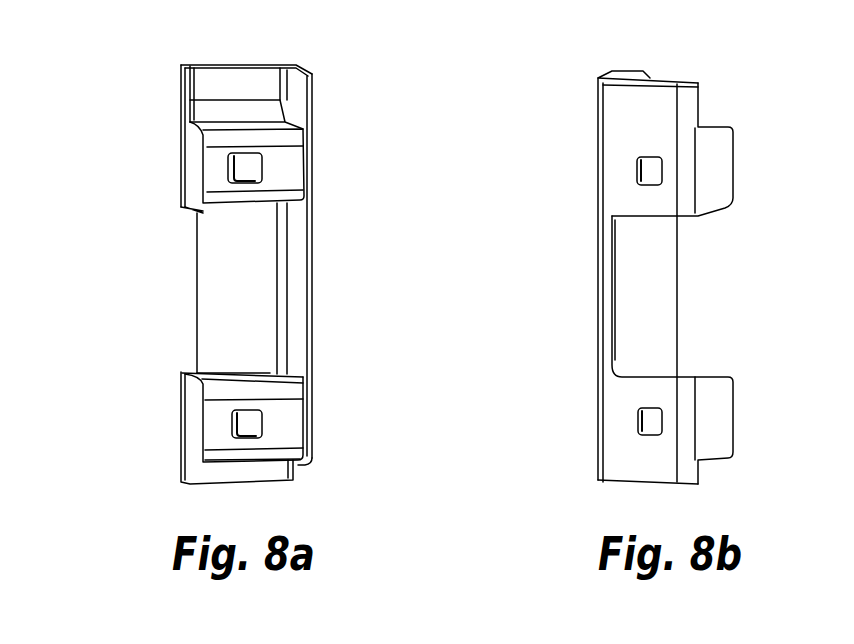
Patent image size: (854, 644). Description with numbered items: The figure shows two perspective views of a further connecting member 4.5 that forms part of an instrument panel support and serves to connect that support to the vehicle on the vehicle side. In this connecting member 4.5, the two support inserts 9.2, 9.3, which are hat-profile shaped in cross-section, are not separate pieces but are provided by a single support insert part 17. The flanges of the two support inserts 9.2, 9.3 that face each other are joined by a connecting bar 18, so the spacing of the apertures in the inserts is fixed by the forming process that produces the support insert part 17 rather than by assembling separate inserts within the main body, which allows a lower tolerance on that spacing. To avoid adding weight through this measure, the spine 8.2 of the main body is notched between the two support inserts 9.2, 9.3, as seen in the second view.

In FIG. 8a, the connecting member 4.5 is at (165, 160).
In FIG. 8b, the connecting member 4.5 is at (588, 203).
In FIG. 8a, the support insert 9.2 is at (255, 127).
In FIG. 8a, the support insert 9.3 is at (272, 378).
In FIG. 8a, the support insert part 17 is at (191, 339).
In FIG. 8a, the connecting bar 18 is at (252, 303).
In FIG. 8b, the spine 8.2 is at (658, 155).